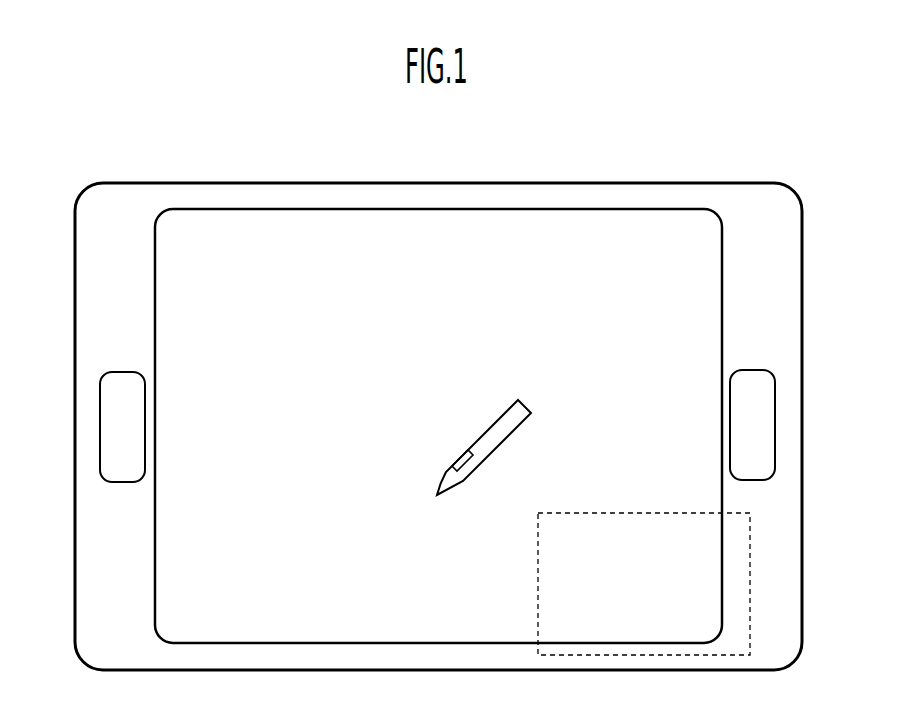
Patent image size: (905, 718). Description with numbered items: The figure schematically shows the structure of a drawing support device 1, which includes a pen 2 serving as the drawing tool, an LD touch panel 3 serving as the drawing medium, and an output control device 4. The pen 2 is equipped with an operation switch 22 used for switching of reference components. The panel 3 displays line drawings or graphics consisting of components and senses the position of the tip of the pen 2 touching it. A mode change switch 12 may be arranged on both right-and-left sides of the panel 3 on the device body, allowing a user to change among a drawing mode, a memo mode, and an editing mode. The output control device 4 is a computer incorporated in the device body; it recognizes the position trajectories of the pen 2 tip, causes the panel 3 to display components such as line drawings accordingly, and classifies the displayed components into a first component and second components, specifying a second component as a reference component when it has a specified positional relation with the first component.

The drawing support device 1 is at (750, 165).
The pen 2 is at (530, 400).
The LD touch panel 3 is at (537, 233).
The output control device 4 is at (750, 557).
The mode change switch 12 is at (118, 370).
The operation switch 22 is at (457, 462).